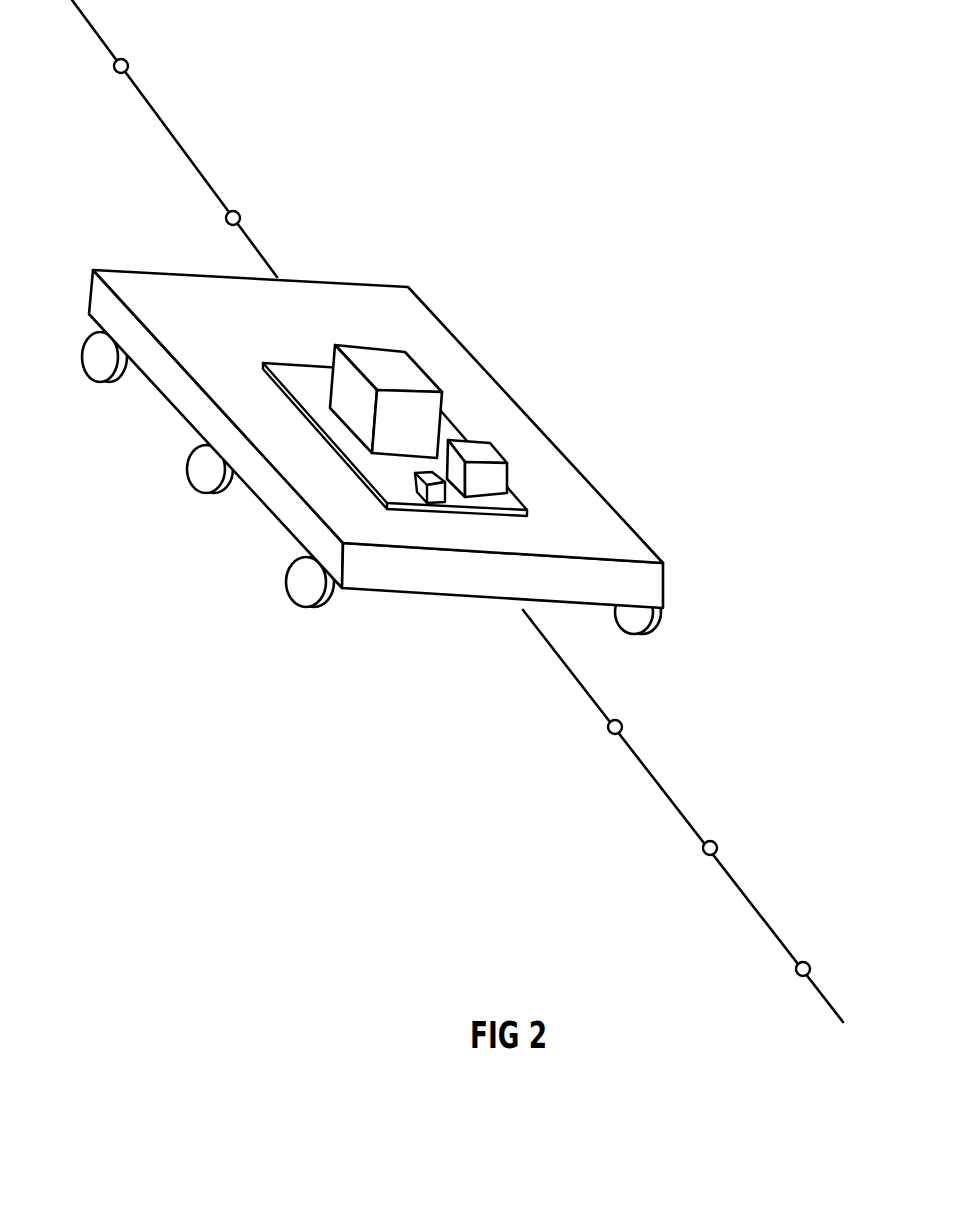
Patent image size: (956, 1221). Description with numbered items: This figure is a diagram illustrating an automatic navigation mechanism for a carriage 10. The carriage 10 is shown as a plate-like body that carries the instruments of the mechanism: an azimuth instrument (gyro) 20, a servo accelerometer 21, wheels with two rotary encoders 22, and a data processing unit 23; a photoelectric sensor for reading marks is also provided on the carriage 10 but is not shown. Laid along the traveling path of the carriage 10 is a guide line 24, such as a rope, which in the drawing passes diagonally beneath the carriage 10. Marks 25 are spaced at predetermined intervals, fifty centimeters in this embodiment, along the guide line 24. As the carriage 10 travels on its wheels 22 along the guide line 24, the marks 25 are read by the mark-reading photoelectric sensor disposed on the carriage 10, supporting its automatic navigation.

The carriage 10 is at (648, 592).
The azimuth instrument (gyro) 20 is at (380, 370).
The servo accelerometer 21 is at (435, 492).
The wheels with two rotary encoders 22 is at (203, 463).
The data processing unit 23 is at (498, 485).
The guide line 24 is at (766, 917).
The marks 25 is at (623, 726).